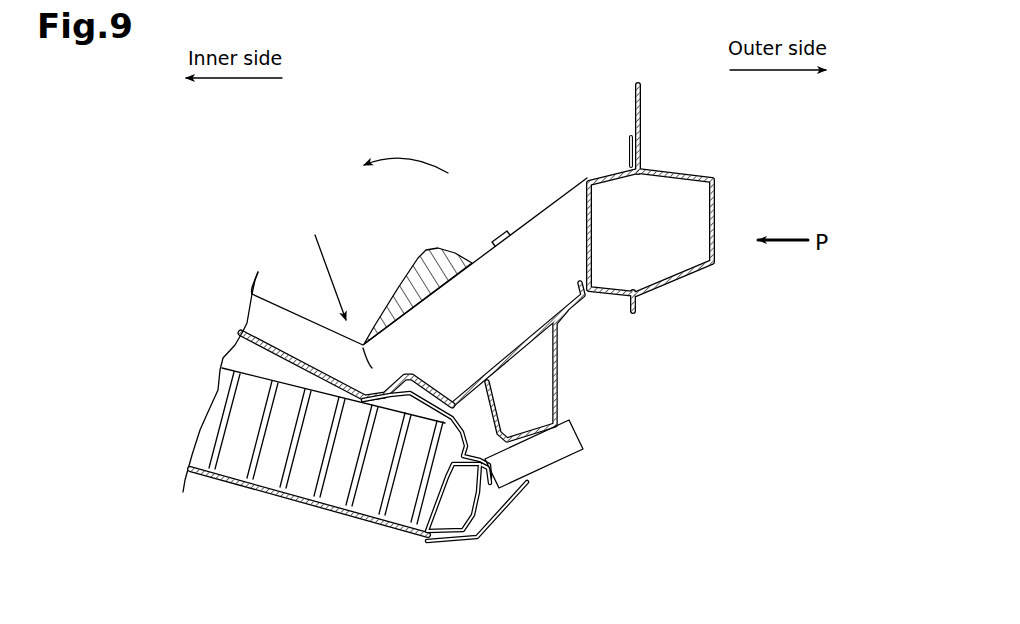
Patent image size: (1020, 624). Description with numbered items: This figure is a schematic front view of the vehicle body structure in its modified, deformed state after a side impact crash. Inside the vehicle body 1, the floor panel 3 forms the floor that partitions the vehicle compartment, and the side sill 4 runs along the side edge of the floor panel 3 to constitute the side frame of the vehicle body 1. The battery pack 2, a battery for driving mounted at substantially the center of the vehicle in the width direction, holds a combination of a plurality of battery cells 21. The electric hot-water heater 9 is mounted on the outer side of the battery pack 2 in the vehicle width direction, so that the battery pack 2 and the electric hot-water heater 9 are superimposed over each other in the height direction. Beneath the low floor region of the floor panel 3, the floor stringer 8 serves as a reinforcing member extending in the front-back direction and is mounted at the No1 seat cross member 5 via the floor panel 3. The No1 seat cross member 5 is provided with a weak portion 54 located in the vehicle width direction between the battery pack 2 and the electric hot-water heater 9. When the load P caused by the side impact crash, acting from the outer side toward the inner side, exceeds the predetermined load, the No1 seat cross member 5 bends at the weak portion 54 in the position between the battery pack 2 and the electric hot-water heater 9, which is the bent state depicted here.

The vehicle body 1 is at (678, 436).
The battery pack 2 is at (258, 506).
The battery cells 21 is at (348, 467).
The floor panel 3 is at (538, 338).
The side sill 4 is at (642, 250).
The No1 seat cross member 5 is at (487, 280).
The floor stringer 8 is at (562, 395).
The electric hot-water heater 9 is at (425, 250).
The weak portion 54 is at (358, 340).